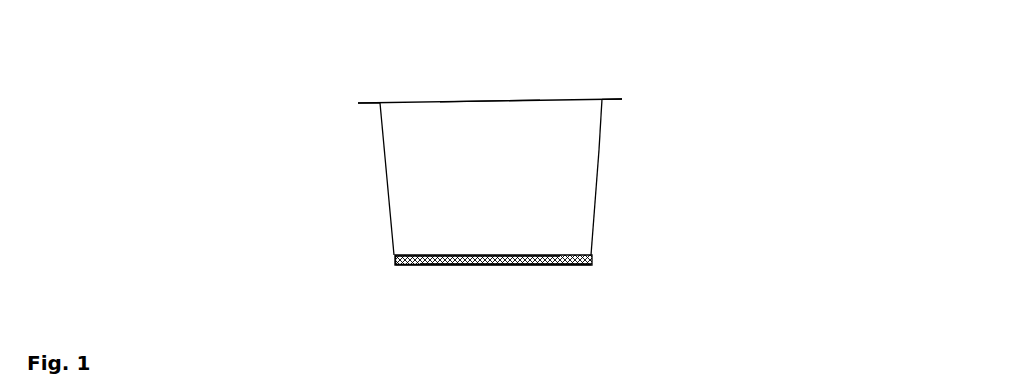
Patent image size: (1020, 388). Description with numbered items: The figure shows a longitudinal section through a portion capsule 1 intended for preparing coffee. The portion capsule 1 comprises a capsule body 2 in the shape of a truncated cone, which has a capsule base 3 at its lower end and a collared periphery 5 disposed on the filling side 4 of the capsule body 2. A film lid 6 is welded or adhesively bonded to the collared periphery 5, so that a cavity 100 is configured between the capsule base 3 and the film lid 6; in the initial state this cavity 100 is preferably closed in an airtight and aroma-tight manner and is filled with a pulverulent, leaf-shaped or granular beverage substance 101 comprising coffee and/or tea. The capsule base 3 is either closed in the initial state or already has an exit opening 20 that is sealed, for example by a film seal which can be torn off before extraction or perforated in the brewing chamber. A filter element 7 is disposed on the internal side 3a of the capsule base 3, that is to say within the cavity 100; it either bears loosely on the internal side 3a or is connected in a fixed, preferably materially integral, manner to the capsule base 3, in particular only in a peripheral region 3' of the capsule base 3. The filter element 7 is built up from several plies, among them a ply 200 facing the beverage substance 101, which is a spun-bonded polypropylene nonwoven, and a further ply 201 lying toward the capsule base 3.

The portion capsule 1 is at (465, 82).
The capsule body 2 is at (603, 156).
The capsule base 3 is at (493, 291).
The peripheral region of the capsule base 3' is at (383, 305).
The internal side of the capsule base 3a is at (467, 262).
The filling side 4 is at (544, 82).
The collared periphery 5 is at (622, 99).
The film lid 6 is at (432, 103).
The filter element 7 is at (540, 265).
The exit opening 20 is at (494, 278).
The cavity 100 is at (555, 193).
The beverage substance 101 is at (600, 124).
The first ply of the filter element 200 is at (513, 251).
The ply of the filter element 201 is at (478, 265).